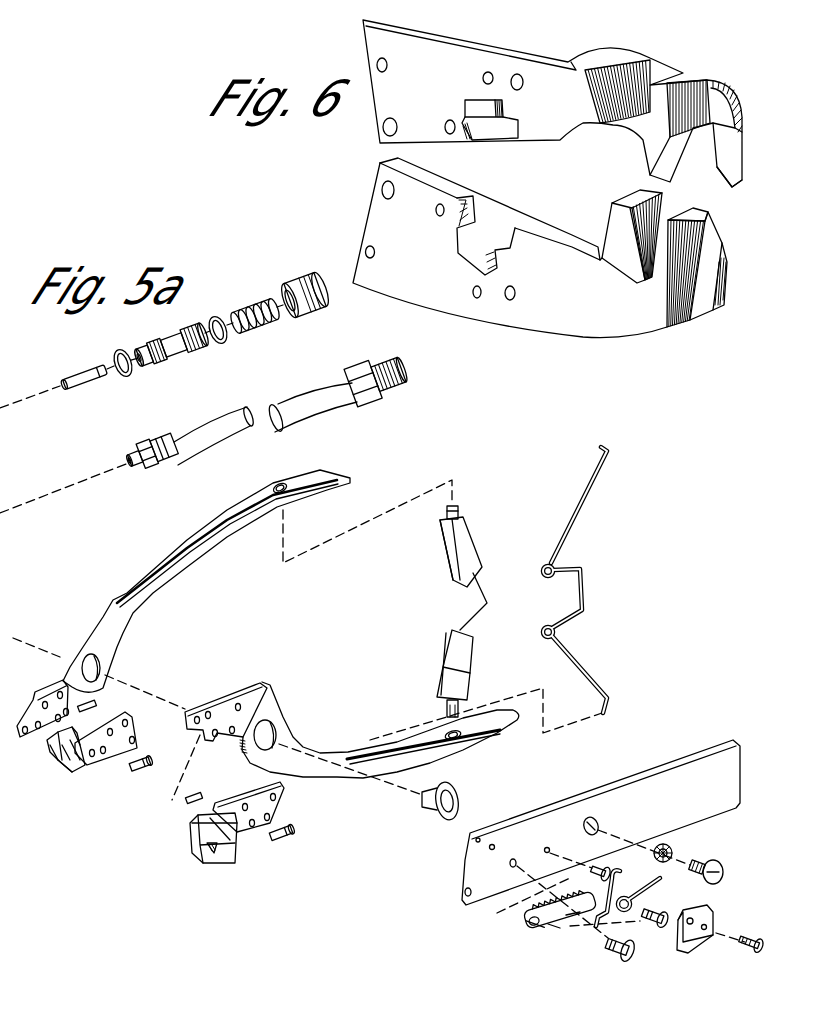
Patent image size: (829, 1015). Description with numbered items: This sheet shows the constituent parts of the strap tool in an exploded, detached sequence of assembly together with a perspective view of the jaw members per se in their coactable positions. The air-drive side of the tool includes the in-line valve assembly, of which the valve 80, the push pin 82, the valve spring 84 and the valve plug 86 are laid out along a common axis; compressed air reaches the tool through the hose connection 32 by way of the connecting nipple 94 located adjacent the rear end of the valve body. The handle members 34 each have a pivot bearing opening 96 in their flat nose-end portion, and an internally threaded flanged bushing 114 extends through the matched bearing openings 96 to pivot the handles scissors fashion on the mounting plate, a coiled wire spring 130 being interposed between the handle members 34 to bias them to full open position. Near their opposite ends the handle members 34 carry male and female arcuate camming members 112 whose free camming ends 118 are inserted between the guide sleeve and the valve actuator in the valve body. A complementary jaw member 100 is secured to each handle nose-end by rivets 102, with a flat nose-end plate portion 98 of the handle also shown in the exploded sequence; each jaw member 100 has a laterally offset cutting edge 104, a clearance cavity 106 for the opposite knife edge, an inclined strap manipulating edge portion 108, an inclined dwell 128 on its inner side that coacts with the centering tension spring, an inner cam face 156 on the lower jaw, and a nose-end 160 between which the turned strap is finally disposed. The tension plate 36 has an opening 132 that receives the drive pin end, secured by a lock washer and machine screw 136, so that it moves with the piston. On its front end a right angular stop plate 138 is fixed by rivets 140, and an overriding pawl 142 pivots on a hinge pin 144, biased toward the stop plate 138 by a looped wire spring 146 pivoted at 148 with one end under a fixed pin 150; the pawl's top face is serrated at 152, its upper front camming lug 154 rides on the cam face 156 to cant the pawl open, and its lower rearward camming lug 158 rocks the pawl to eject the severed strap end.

In FIG. 5A, the hose connection 32 is at (312, 402).
In FIG. 5A, the handle member 34 is at (163, 585).
In FIG. 5A, the tension plate 36 is at (633, 775).
In FIG. 5A, the valve 80 is at (177, 360).
In FIG. 5A, the push pin 82 is at (85, 385).
In FIG. 5A, the valve spring 84 is at (250, 330).
In FIG. 5A, the valve plug 86 is at (320, 306).
In FIG. 5A, the connecting nipple 94 is at (152, 462).
In FIG. 5A, the pivot bearing opening 96 is at (101, 668).
In FIG. 5A, the mounting plate 98 is at (63, 680).
In FIG. 6, the jaw member 100 is at (518, 52).
In FIG. 5A, the jaw member 100 is at (100, 765).
In FIG. 5A, the rivet 102 is at (143, 774).
In FIG. 6, the cutting or knife edge 104 is at (650, 153).
In FIG. 5A, the cutting or knife edge 104 is at (72, 773).
In FIG. 6, the clearance cavity 106 is at (708, 148).
In FIG. 5A, the clearance cavity 106 is at (210, 852).
In FIG. 6, the inclined strap manipulating edge portion 108 is at (733, 195).
In FIG. 5A, the inclined strap manipulating edge portion 108 is at (50, 755).
In FIG. 5A, the arcuate camming member 112 is at (467, 530).
In FIG. 5A, the flanged bushing 114 is at (433, 818).
In FIG. 5A, the free camming end 118 is at (491, 601).
In FIG. 6, the inclined dwell 128 is at (493, 127).
In FIG. 5A, the coiled wire spring 130 is at (563, 541).
In FIG. 5A, the opening 132 is at (591, 817).
In FIG. 5A, the lock washer and machine screw 136 is at (723, 863).
In FIG. 5A, the stop plate 138 is at (712, 913).
In FIG. 5A, the rivet 140 is at (748, 946).
In FIG. 5A, the overriding pawl 142 is at (505, 908).
In FIG. 5A, the hinge pin 144 is at (620, 960).
In FIG. 5A, the looped wire spring 146 is at (658, 884).
In FIG. 5A, the spring pivot 148 is at (660, 927).
In FIG. 5A, the fixed pin 150 is at (603, 867).
In FIG. 5A, the serrated top face 152 is at (572, 920).
In FIG. 5A, the upper front camming lug 154 is at (530, 917).
In FIG. 6, the inner cam face 156 is at (637, 193).
In FIG. 5A, the lower rearwardly extending camming lug 158 is at (570, 933).
In FIG. 6, the nose-end 160 is at (735, 121).
In FIG. 5A, the nose-end 160 is at (60, 783).